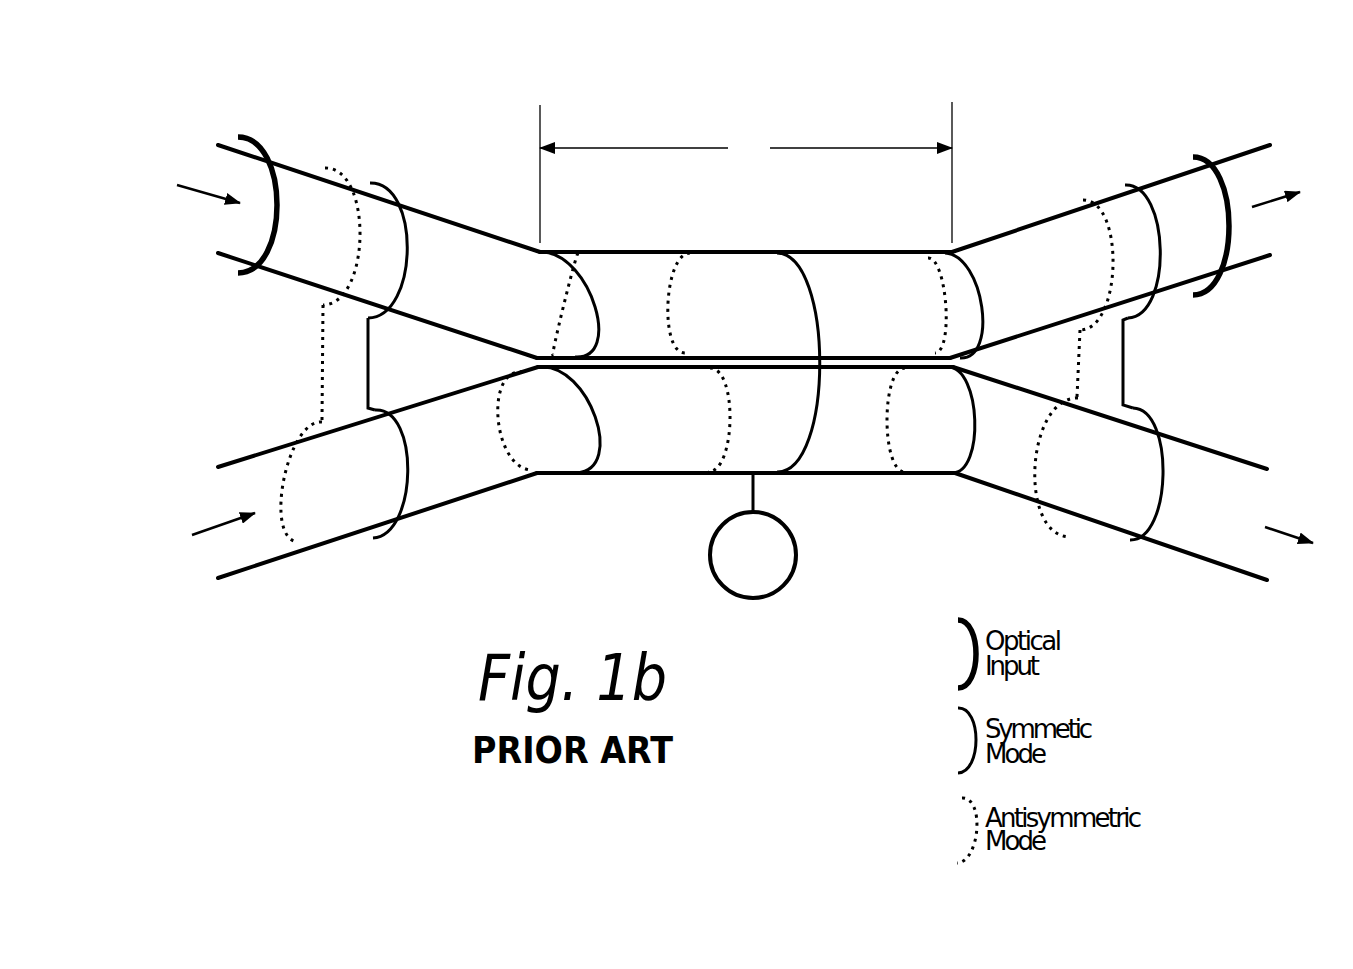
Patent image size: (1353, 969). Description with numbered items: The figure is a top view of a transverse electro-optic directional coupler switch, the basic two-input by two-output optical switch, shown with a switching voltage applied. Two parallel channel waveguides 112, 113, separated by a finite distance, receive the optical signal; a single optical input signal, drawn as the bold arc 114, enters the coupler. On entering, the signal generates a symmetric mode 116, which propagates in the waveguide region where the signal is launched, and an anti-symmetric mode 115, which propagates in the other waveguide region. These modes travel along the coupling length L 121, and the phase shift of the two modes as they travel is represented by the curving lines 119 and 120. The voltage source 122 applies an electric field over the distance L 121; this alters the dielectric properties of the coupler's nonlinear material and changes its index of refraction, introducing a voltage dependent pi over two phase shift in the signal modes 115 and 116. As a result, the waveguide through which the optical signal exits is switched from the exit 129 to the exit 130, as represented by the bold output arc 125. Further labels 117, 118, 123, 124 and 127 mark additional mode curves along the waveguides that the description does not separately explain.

The channel waveguide 112 is at (195, 187).
The channel waveguide 113 is at (208, 520).
The optical input signal 114 is at (255, 148).
The anti-symmetric mode 115 is at (337, 167).
The symmetric mode 116 is at (373, 187).
The symmetric mode at coupling region entrance 117 is at (548, 253).
The antisymmetric mode at coupling region entrance 118 is at (588, 252).
The dotted curving line 119 is at (692, 255).
The curving line 120 is at (777, 253).
The coupling length L 121 is at (542, 113).
The voltage source 122 is at (778, 592).
The antisymmetric mode at coupling region exit 123 is at (935, 250).
The symmetric mode at coupling region exit 124 is at (975, 267).
The switched output optical signal 125 is at (1198, 157).
The symmetric mode in output waveguide 127 is at (1057, 197).
The output waveguide exit 129 is at (1275, 537).
The output waveguide exit 130 is at (1268, 210).